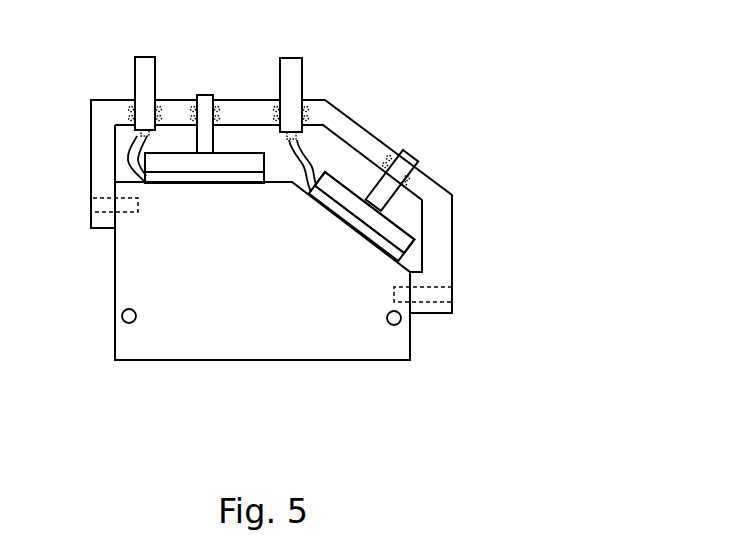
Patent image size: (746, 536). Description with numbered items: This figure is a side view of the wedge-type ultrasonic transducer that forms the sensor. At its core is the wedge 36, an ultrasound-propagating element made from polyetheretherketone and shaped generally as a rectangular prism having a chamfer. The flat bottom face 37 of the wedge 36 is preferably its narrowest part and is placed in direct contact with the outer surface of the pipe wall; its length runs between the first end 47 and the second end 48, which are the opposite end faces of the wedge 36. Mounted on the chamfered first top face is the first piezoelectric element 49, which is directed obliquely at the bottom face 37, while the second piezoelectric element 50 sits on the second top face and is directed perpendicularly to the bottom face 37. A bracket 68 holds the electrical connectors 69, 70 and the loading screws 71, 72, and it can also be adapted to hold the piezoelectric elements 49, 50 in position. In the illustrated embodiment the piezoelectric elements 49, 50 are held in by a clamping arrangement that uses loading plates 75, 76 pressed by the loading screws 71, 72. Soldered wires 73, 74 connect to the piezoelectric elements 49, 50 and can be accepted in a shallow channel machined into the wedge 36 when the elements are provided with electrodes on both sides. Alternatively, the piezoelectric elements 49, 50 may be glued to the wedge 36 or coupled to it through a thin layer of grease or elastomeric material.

The wedge 36 is at (127, 262).
The bottom face 37 is at (207, 361).
The first end 47 is at (114, 337).
The second end 48 is at (411, 337).
The first piezoelectric element 49 is at (358, 230).
The second piezoelectric element 50 is at (205, 177).
The bracket 68 is at (90, 152).
The electrical connector 69 is at (286, 63).
The electrical connector 70 is at (145, 60).
The loading screw 71 is at (406, 150).
The loading screw 72 is at (203, 93).
The soldered wire 73 is at (304, 181).
The soldered wire 74 is at (137, 141).
The loading plate 75 is at (344, 197).
The loading plate 76 is at (245, 163).